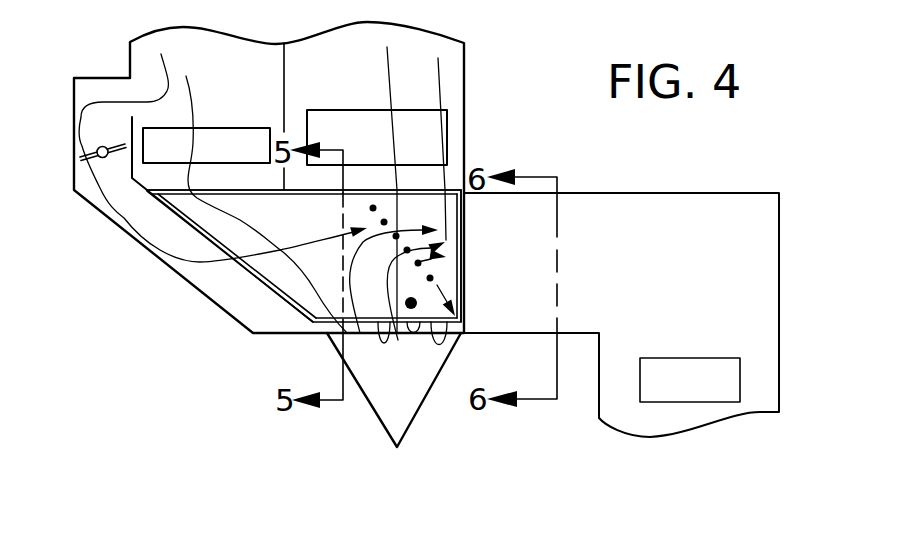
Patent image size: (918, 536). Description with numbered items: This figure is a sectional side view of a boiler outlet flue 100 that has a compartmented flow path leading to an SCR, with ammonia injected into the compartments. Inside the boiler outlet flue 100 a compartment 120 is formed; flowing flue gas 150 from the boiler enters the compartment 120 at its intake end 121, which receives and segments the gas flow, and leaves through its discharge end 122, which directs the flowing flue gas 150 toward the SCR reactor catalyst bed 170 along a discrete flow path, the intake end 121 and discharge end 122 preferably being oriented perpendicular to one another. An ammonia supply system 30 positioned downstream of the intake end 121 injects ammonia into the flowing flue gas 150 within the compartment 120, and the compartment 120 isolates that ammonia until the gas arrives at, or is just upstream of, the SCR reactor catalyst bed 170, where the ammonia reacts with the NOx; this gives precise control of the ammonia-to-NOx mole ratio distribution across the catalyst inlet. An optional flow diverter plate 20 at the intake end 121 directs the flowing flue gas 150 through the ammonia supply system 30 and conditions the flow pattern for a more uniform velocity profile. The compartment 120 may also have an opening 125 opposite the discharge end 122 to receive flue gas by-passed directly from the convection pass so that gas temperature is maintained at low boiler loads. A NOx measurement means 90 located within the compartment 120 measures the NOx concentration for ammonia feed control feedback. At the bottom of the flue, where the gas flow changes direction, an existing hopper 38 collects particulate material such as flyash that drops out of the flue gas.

The boiler outlet flue 100 is at (304, 226).
The compartment 120 is at (275, 265).
The intake end 121 is at (328, 325).
The discharge end 122 is at (465, 222).
The opening 125 is at (187, 215).
The flowing flue gas 150 is at (223, 191).
The ammonia supply system 30 is at (388, 220).
The flow diverter plate 20 is at (461, 301).
The NOx measurement means 90 is at (411, 309).
The hopper 38 is at (405, 405).
The SCR reactor catalyst bed 170 is at (713, 358).